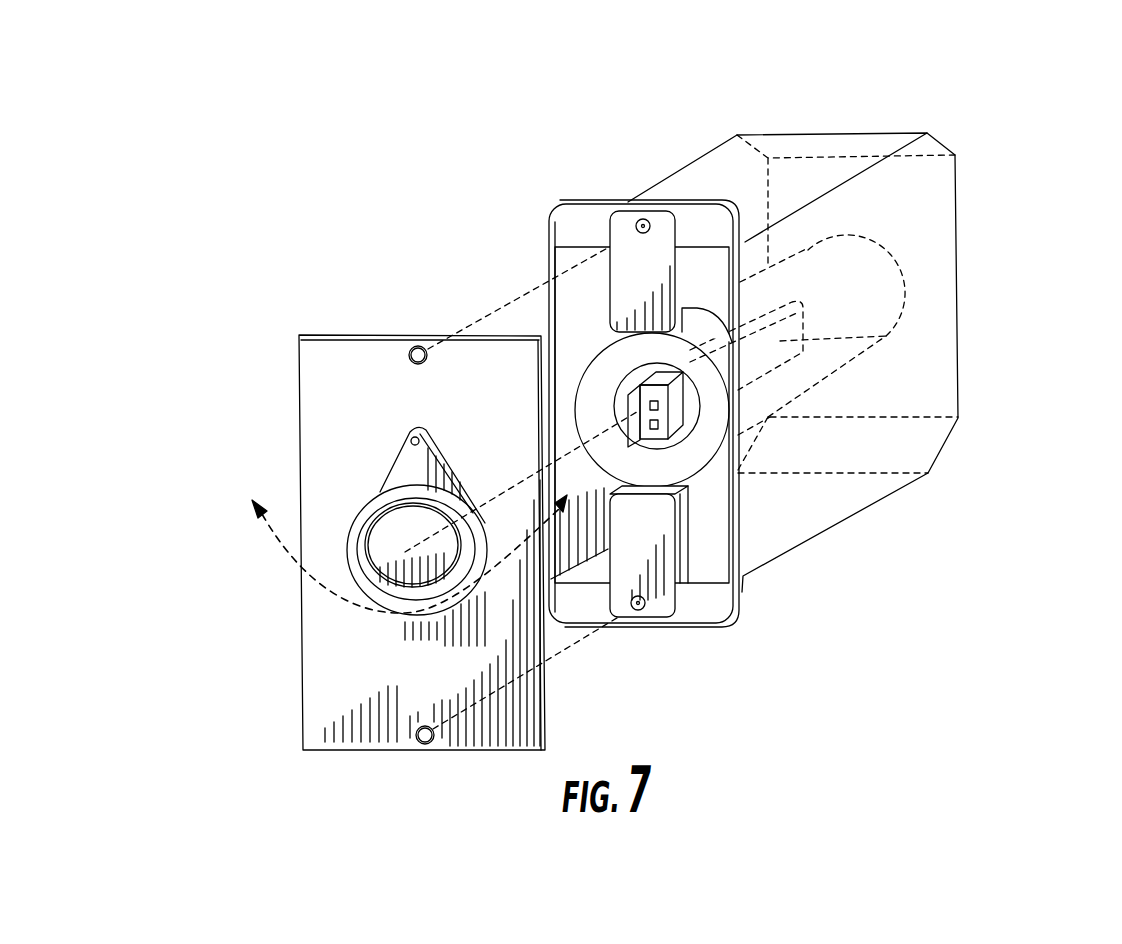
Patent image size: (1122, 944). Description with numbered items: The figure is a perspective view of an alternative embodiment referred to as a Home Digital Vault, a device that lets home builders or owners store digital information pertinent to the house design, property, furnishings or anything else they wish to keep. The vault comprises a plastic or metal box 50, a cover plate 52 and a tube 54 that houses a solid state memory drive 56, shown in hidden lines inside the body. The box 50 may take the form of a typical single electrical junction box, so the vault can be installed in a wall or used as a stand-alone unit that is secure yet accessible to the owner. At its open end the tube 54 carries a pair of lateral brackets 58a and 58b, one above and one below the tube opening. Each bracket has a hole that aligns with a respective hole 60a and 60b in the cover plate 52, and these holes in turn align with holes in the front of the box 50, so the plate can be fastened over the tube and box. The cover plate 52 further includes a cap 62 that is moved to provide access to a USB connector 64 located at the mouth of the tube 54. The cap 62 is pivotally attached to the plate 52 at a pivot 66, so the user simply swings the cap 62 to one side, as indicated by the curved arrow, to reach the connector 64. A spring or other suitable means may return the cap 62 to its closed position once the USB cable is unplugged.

The box 50 is at (713, 180).
The cover plate 52 is at (330, 650).
The tube 54 is at (703, 452).
The solid state memory drive 56 is at (885, 335).
The lateral bracket 58a is at (625, 287).
The lateral bracket 58b is at (657, 610).
The hole 60a is at (417, 345).
The hole 60b is at (428, 748).
The cap 62 is at (388, 528).
The USB connector 64 is at (667, 414).
The pivot 66 is at (405, 437).